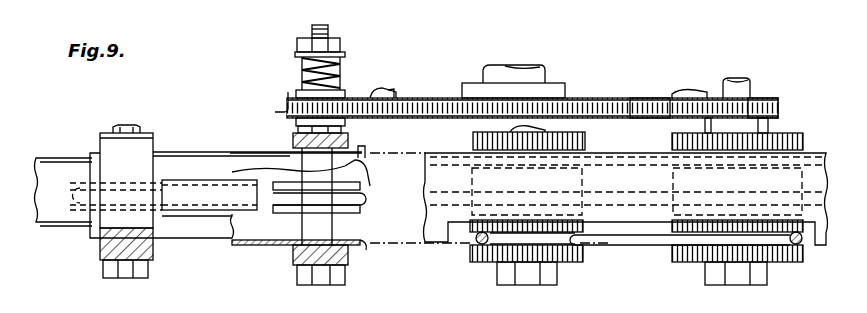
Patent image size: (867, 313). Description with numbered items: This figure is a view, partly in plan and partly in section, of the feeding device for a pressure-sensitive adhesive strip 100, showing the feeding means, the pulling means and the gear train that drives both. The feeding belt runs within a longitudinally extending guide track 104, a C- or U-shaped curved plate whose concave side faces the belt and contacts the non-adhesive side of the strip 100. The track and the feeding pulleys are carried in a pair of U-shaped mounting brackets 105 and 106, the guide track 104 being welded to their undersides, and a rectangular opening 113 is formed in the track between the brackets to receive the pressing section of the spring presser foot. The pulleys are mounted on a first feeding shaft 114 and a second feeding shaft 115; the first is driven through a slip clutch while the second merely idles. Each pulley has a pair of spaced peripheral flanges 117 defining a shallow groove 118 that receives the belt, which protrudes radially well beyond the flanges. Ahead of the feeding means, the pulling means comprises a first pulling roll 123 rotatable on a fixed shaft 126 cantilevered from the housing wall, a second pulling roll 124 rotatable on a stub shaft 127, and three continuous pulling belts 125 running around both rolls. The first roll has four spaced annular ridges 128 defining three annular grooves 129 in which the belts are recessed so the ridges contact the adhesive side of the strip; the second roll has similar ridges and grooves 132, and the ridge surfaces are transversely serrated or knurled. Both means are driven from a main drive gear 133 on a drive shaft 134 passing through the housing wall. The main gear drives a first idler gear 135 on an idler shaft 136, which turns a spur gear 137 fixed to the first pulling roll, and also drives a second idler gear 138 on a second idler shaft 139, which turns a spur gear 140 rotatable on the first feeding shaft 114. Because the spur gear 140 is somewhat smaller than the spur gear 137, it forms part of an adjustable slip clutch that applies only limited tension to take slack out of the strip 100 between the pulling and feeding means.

The pressure-sensitive adhesive strip 100 is at (440, 243).
The guide track 104 is at (180, 152).
The U-shaped mounting bracket 105 is at (293, 254).
The U-shaped mounting bracket 106 is at (100, 142).
The rectangular opening 113 is at (220, 180).
The first feeding shaft 114 is at (312, 31).
The second feeding shaft 115 is at (132, 118).
The peripheral flanges 117 is at (360, 180).
The groove 118 is at (307, 221).
The first pulling roll 123 is at (793, 133).
The second pulling roll 124 is at (585, 138).
The pulling belts 125 is at (643, 237).
The fixed shaft 126 is at (735, 78).
The stub shaft 127 is at (540, 129).
The annular ridges 128 is at (692, 232).
The annular grooves 129 is at (776, 246).
The grooves 132 is at (503, 236).
The main drive gear 133 is at (598, 98).
The drive shaft 134 is at (506, 75).
The first idler gear 135 is at (650, 98).
The idler shaft 136 is at (693, 90).
The spur gear 137 is at (766, 98).
The second idler gear 138 is at (370, 98).
The second idler shaft 139 is at (393, 92).
The spur gear 140 is at (268, 98).